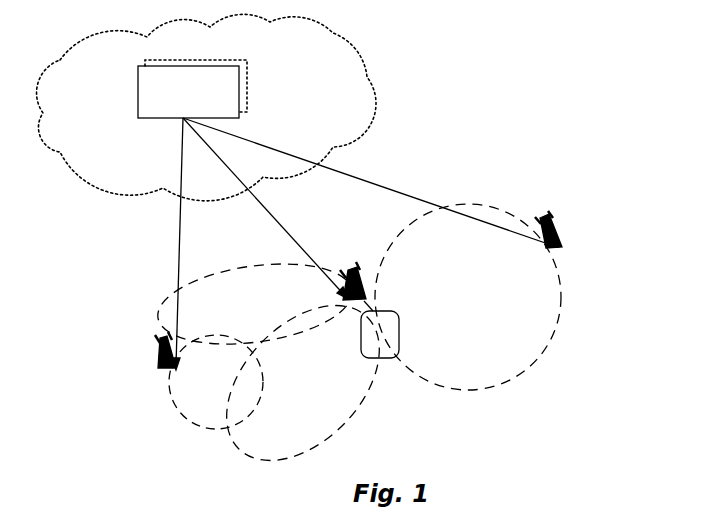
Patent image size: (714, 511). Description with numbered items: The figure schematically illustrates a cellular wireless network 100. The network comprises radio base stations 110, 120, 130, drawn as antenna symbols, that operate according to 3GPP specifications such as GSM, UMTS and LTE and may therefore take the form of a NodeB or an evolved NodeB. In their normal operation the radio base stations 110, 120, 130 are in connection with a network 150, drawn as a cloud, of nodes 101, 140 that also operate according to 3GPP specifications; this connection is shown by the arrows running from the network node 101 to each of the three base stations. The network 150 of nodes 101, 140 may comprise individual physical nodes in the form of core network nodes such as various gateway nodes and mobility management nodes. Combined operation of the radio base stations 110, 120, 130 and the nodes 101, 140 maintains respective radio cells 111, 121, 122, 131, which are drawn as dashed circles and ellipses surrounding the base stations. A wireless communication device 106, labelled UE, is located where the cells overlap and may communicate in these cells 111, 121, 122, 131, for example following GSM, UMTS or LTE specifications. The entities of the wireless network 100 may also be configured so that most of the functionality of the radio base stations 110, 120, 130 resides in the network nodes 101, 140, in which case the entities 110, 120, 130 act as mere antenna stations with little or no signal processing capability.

The cellular wireless network 100 is at (150, 251).
The network node 101 is at (138, 100).
The wireless communication device 106 is at (388, 359).
The radio base station 110 is at (162, 366).
The radio cell 111 is at (169, 396).
The radio base station 120 is at (347, 265).
The radio cell 121 is at (248, 266).
The radio cell 122 is at (247, 448).
The radio base station 130 is at (543, 213).
The radio cell 131 is at (557, 283).
The network node 140 is at (247, 97).
The network of nodes 150 is at (374, 107).